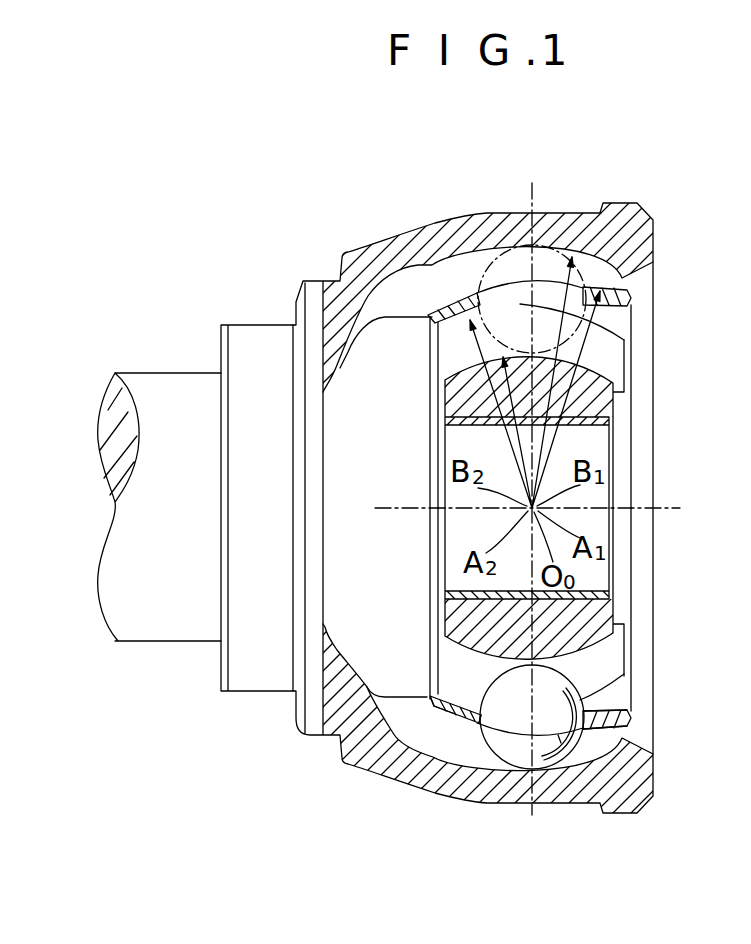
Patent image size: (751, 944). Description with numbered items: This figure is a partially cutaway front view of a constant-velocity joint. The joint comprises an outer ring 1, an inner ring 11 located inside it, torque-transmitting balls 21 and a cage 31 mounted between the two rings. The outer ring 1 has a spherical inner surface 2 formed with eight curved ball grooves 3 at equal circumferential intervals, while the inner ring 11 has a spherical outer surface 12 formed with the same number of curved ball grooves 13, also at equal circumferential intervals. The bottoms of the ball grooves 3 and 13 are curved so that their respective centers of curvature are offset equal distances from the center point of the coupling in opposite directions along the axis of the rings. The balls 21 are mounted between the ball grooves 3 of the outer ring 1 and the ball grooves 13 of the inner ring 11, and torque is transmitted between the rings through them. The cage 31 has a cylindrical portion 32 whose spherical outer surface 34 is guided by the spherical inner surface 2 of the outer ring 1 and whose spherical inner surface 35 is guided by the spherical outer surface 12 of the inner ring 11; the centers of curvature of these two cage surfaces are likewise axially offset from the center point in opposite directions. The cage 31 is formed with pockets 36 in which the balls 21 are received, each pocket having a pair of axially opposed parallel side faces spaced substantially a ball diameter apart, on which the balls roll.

The outer ring 1 is at (417, 230).
The spherical inner surface 2 is at (632, 314).
The ball grooves 3 is at (576, 266).
The inner ring 11 is at (603, 398).
The spherical outer surface 12 is at (456, 292).
The ball grooves 13 is at (617, 352).
The torque-transmitting balls 21 is at (565, 745).
The cage 31 is at (610, 737).
The cylindrical portion 32 is at (603, 720).
The spherical outer surface 34 is at (438, 705).
The spherical inner surface 35 is at (432, 700).
The pockets 36 is at (481, 718).